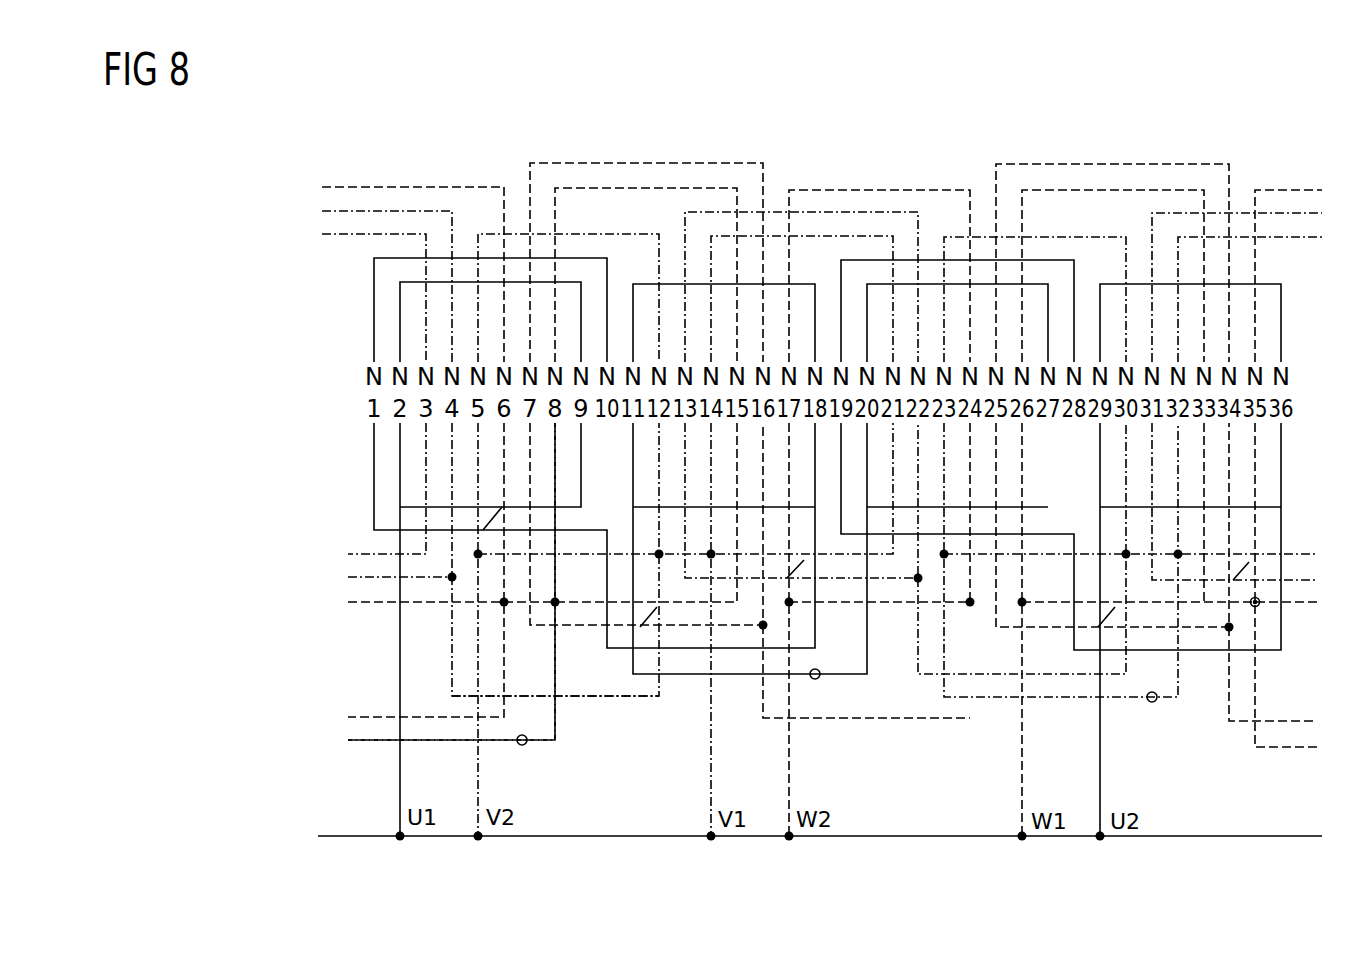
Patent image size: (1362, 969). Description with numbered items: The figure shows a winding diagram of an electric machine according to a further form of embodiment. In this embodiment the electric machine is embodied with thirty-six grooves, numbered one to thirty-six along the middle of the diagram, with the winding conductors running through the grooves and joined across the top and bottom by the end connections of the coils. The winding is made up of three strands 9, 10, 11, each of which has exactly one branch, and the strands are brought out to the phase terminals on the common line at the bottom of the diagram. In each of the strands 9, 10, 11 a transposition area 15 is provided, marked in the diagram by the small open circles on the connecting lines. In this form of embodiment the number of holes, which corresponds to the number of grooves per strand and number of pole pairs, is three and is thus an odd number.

The strand 9 is at (383, 760).
The strand 10 is at (547, 758).
The strand 11 is at (613, 713).
The transposition area 15 is at (522, 746).